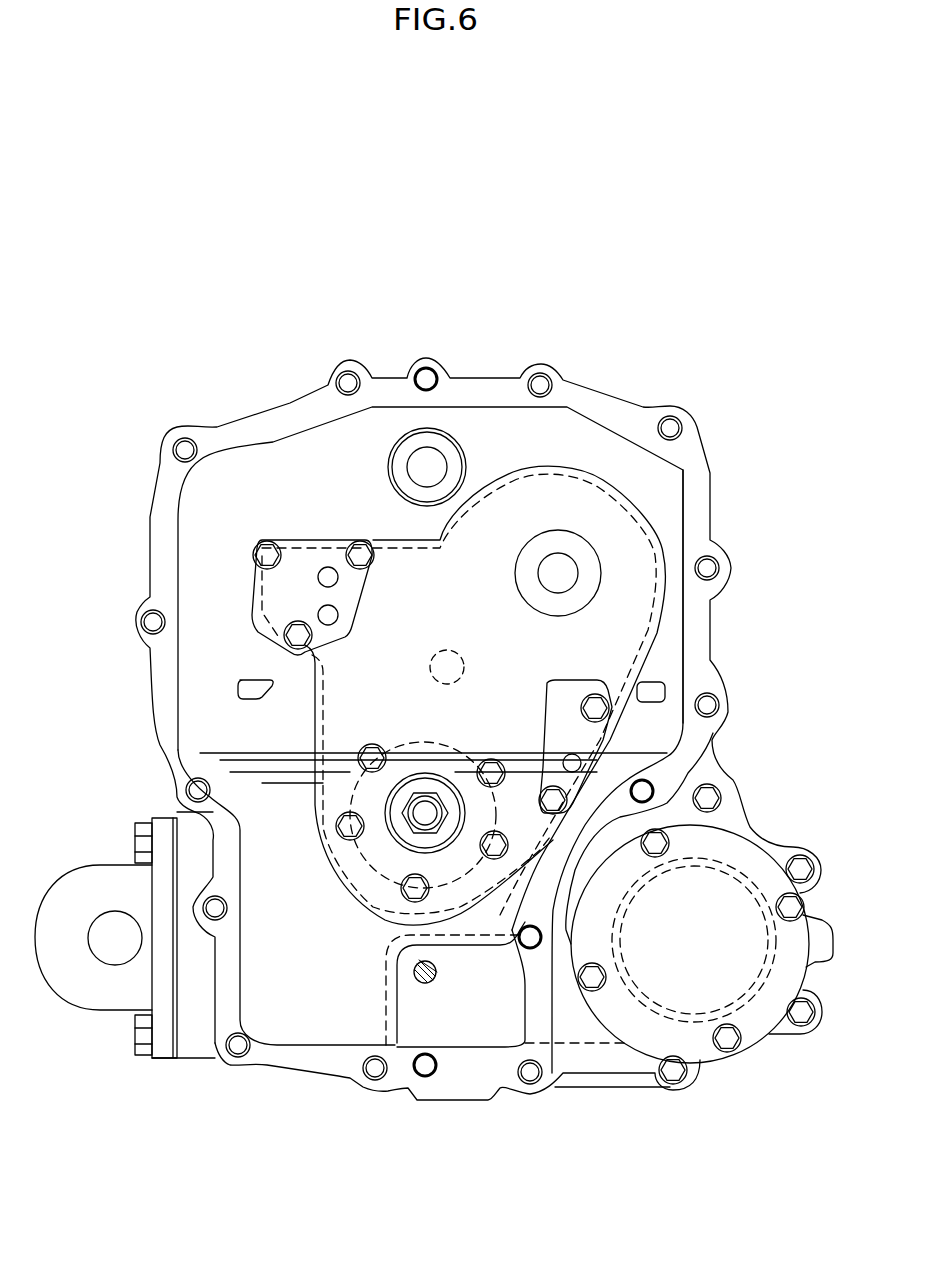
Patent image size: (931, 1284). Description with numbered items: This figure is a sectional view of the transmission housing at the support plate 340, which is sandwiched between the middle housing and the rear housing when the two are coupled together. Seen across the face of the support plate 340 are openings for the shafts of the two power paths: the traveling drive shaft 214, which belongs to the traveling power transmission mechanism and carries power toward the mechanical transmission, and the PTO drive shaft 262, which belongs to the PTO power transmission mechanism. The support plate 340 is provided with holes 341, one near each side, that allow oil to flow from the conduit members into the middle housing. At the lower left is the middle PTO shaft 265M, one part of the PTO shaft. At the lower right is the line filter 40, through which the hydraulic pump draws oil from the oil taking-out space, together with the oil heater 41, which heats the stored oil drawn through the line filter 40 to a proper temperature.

The PTO drive shaft 262 is at (432, 462).
The traveling drive shaft 214 is at (560, 572).
The support plate 340 is at (660, 618).
The holes 341 is at (246, 678).
The middle PTO shaft 265M is at (113, 948).
The oil heater 41 is at (430, 982).
The line filter 40 is at (733, 1007).